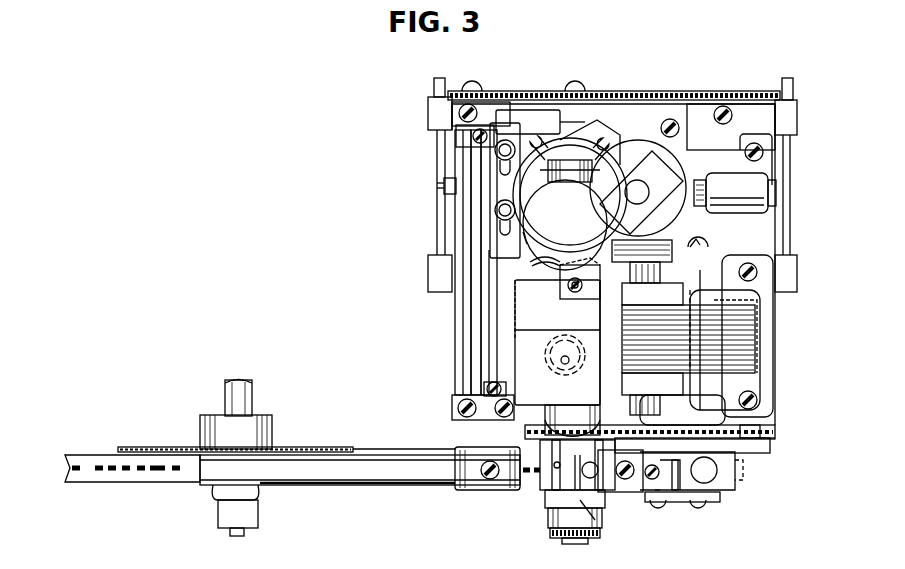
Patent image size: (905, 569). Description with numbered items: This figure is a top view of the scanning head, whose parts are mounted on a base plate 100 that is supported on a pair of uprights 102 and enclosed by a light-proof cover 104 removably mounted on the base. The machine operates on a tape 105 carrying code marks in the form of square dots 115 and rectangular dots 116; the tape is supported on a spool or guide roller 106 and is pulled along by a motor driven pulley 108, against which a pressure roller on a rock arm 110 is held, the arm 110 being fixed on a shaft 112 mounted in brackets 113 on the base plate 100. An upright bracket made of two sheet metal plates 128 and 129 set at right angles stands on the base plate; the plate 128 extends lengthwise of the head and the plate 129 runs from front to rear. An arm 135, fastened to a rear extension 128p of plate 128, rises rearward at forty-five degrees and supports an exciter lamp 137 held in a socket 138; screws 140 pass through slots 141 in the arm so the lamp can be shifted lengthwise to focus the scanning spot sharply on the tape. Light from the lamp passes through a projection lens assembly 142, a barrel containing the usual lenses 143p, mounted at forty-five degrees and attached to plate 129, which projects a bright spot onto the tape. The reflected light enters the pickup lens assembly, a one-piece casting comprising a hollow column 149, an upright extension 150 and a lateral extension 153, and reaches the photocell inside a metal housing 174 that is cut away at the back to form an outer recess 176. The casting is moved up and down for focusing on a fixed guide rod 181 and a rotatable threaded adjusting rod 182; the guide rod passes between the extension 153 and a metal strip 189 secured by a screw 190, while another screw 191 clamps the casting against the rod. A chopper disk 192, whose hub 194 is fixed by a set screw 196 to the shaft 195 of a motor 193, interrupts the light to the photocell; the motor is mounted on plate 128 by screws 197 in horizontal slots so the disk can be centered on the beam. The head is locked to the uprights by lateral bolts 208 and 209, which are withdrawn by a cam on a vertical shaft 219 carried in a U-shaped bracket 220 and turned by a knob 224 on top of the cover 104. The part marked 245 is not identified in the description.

The base plate 100 is at (460, 302).
The uprights 102 is at (437, 236).
The light-proof cover 104 is at (716, 92).
The tape 105 is at (95, 458).
The spool or guide roller 106 is at (545, 500).
The motor driven pulley 108 is at (290, 450).
The rock arm 110 is at (328, 485).
The shaft 112 is at (480, 328).
The brackets 113 is at (478, 103).
The square dots 115 is at (108, 474).
The rectangular dots 116 is at (160, 474).
The bracket plate 128 is at (712, 262).
The rear extension of bracket plate 128p is at (530, 262).
The bracket plate 129 is at (600, 364).
The arm 135 is at (508, 122).
The exciter lamp 137 is at (581, 218).
The socket 138 is at (580, 145).
The screws 140 is at (540, 122).
The slots 141 is at (528, 238).
The projection lens assembly 142 is at (565, 410).
The lenses 143p is at (556, 282).
The hollow column 149 is at (582, 498).
The upright extension 150 is at (540, 488).
The lateral extension 153 is at (725, 448).
The metal housing 174 is at (545, 353).
The outer recess 176 is at (590, 345).
The guide rod 181 is at (722, 480).
The adjusting rod 182 is at (628, 482).
The metal strip 189 is at (708, 483).
The screw 190 is at (654, 482).
The clamping screw 191 is at (698, 495).
The chopper disk 192 is at (760, 432).
The motor 193 is at (762, 343).
The hub 194 is at (668, 432).
The motor shaft 195 is at (632, 418).
The set screw 196 is at (660, 436).
The screws 197 is at (708, 236).
The lateral bolt 208 is at (780, 196).
The lateral bolt 209 is at (444, 187).
The vertical shaft 219 is at (637, 180).
The U-shaped bracket 220 is at (658, 250).
The knob 224 is at (665, 177).
The bracket 245 is at (586, 292).